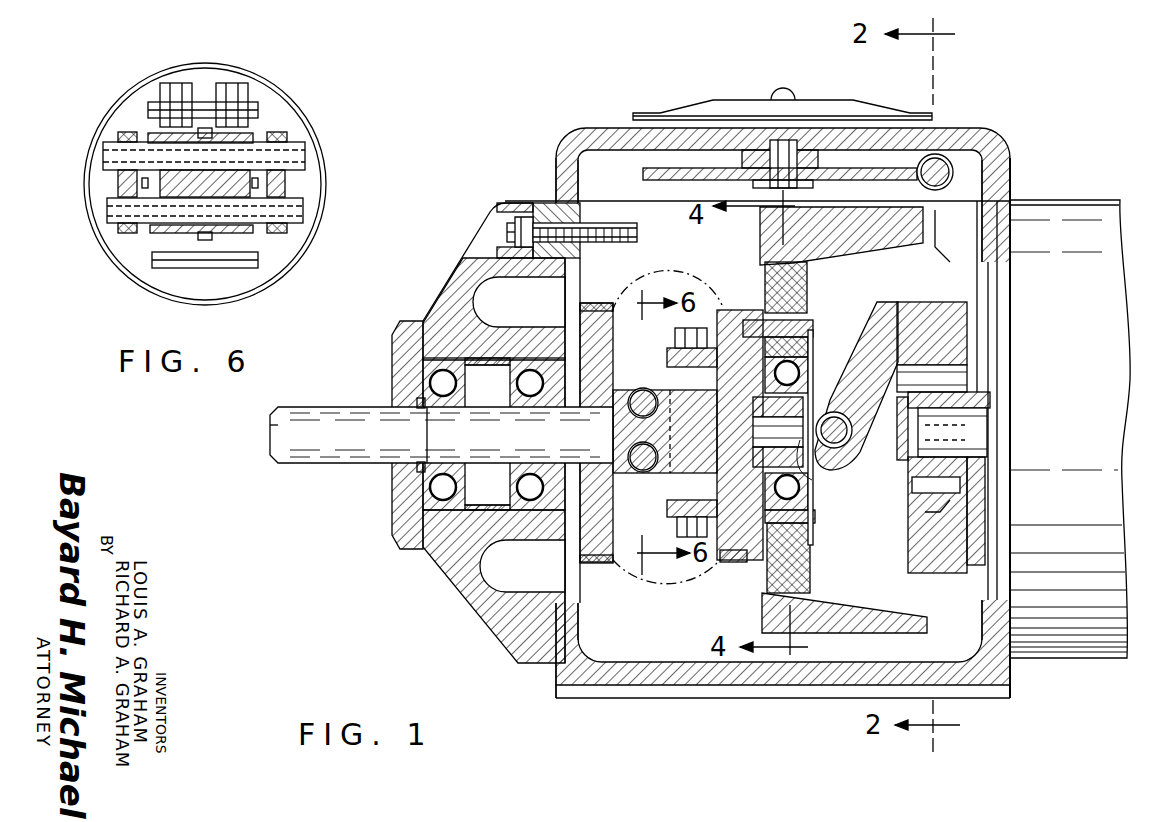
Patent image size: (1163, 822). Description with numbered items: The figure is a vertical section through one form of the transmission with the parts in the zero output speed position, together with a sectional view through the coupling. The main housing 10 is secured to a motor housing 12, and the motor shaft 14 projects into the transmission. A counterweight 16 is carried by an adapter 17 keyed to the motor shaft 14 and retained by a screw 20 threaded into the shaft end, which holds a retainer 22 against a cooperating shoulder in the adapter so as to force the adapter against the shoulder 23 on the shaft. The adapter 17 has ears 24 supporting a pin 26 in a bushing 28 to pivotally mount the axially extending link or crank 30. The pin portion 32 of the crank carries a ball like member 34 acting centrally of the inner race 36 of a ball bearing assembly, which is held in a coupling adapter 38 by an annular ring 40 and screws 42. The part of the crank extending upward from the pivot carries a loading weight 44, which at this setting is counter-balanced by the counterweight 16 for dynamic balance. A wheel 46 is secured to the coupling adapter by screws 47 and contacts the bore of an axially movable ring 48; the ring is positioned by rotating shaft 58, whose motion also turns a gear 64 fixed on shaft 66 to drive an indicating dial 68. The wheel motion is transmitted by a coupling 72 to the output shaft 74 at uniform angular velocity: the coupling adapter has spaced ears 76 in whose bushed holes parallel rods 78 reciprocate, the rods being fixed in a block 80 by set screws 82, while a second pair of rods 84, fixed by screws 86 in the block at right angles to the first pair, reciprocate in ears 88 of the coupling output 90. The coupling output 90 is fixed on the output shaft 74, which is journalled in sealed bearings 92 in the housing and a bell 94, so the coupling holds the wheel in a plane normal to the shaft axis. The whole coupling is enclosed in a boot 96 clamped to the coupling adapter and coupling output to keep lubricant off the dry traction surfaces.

In FIG. 1, the main housing 10 is at (595, 688).
In FIG. 1, the motor housing 12 is at (1103, 208).
In FIG. 1, the motor shaft 14 is at (975, 425).
In FIG. 1, the counterweight 16 is at (948, 530).
In FIG. 1, the adapter 17 is at (975, 550).
In FIG. 1, the screw 20 is at (900, 455).
In FIG. 1, the retainer 22 is at (900, 470).
In FIG. 1, the shoulder 23 is at (995, 400).
In FIG. 1, the ears 24 is at (884, 490).
In FIG. 1, the pin 26 is at (845, 420).
In FIG. 1, the bushing 28 is at (831, 469).
In FIG. 1, the axially extending link or crank 30 is at (860, 320).
In FIG. 1, the axially extending pin portion 32 is at (790, 420).
In FIG. 1, the ball like member 34 is at (770, 458).
In FIG. 1, the inner race 36 is at (813, 480).
In FIG. 1, the coupling adapter 38 is at (740, 562).
In FIG. 1, the annular ring 40 is at (808, 347).
In FIG. 1, the screws 42 is at (805, 370).
In FIG. 1, the loading weight 44 is at (940, 328).
In FIG. 1, the wheel 46 is at (810, 588).
In FIG. 1, the screws 47 is at (800, 305).
In FIG. 1, the axially movable ring 48 is at (855, 620).
In FIG. 1, the shaft 58 is at (942, 160).
In FIG. 1, the gear 64 is at (655, 170).
In FIG. 1, the shaft 66 is at (785, 150).
In FIG. 1, the indicating dial 68 is at (718, 100).
In FIG. 1, the coupling 72 is at (650, 585).
In FIG. 1, the output shaft 74 is at (282, 460).
In FIG. 6, the spaced ears 76 is at (150, 108).
In FIG. 1, the spaced ears 76 is at (718, 312).
In FIG. 6, the parallel rods 78 is at (170, 85).
In FIG. 1, the parallel rods 78 is at (680, 340).
In FIG. 6, the block 80 is at (228, 180).
In FIG. 1, the block 80 is at (690, 420).
In FIG. 6, the set screws 82 is at (120, 185).
In FIG. 6, the rods 84 is at (295, 152).
In FIG. 1, the rods 84 is at (640, 420).
In FIG. 6, the screws 86 is at (205, 130).
In FIG. 6, the ears 88 is at (125, 233).
In FIG. 6, the coupling output 90 is at (96, 156).
In FIG. 1, the coupling output 90 is at (598, 548).
In FIG. 1, the bearings 92 is at (432, 383).
In FIG. 1, the bell 94 is at (448, 300).
In FIG. 1, the boot 96 is at (658, 282).